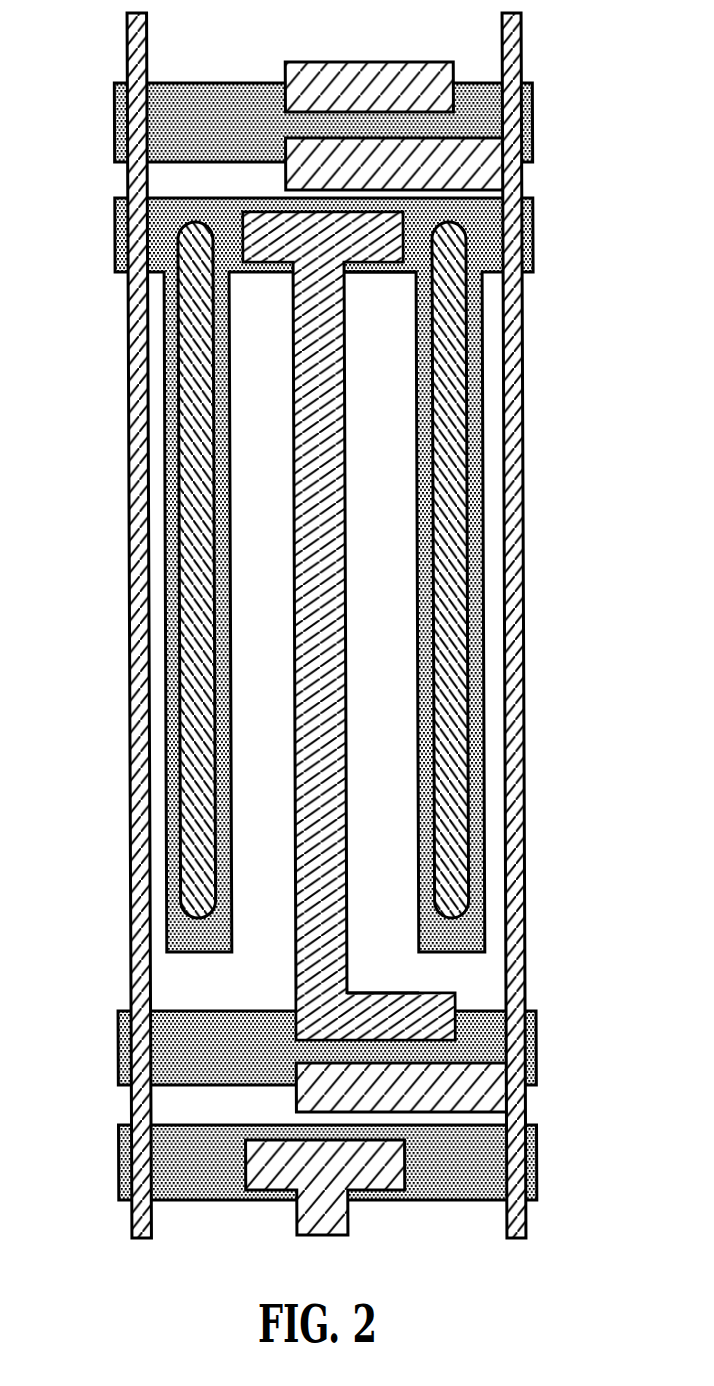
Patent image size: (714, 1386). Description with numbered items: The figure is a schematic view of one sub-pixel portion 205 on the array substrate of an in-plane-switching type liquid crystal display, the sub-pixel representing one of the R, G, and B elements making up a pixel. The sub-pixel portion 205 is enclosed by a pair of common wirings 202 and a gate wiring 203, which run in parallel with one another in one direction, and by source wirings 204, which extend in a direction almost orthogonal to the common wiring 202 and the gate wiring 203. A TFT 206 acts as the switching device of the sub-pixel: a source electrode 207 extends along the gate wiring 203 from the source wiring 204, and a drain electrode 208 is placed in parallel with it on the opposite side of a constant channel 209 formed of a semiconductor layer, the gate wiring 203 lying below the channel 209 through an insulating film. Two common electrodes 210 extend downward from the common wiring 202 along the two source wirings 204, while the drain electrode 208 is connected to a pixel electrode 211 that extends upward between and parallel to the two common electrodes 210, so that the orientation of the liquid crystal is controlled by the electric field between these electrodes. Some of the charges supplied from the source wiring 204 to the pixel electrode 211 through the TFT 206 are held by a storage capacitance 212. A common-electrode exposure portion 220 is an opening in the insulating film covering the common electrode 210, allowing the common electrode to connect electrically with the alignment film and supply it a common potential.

The common wiring 202 is at (533, 207).
The gate wiring 203 is at (487, 106).
The source wiring 204 is at (525, 647).
The sub-pixel portion 205 is at (388, 759).
The TFT 206 is at (287, 1048).
The source electrode 207 is at (297, 1100).
The drain electrode 208 is at (457, 997).
The channel 209 is at (445, 1053).
The common electrode 210 is at (470, 493).
The pixel electrode 211 is at (348, 843).
The storage capacitance 212 is at (377, 239).
The common-electrode exposure portion 220 is at (457, 352).